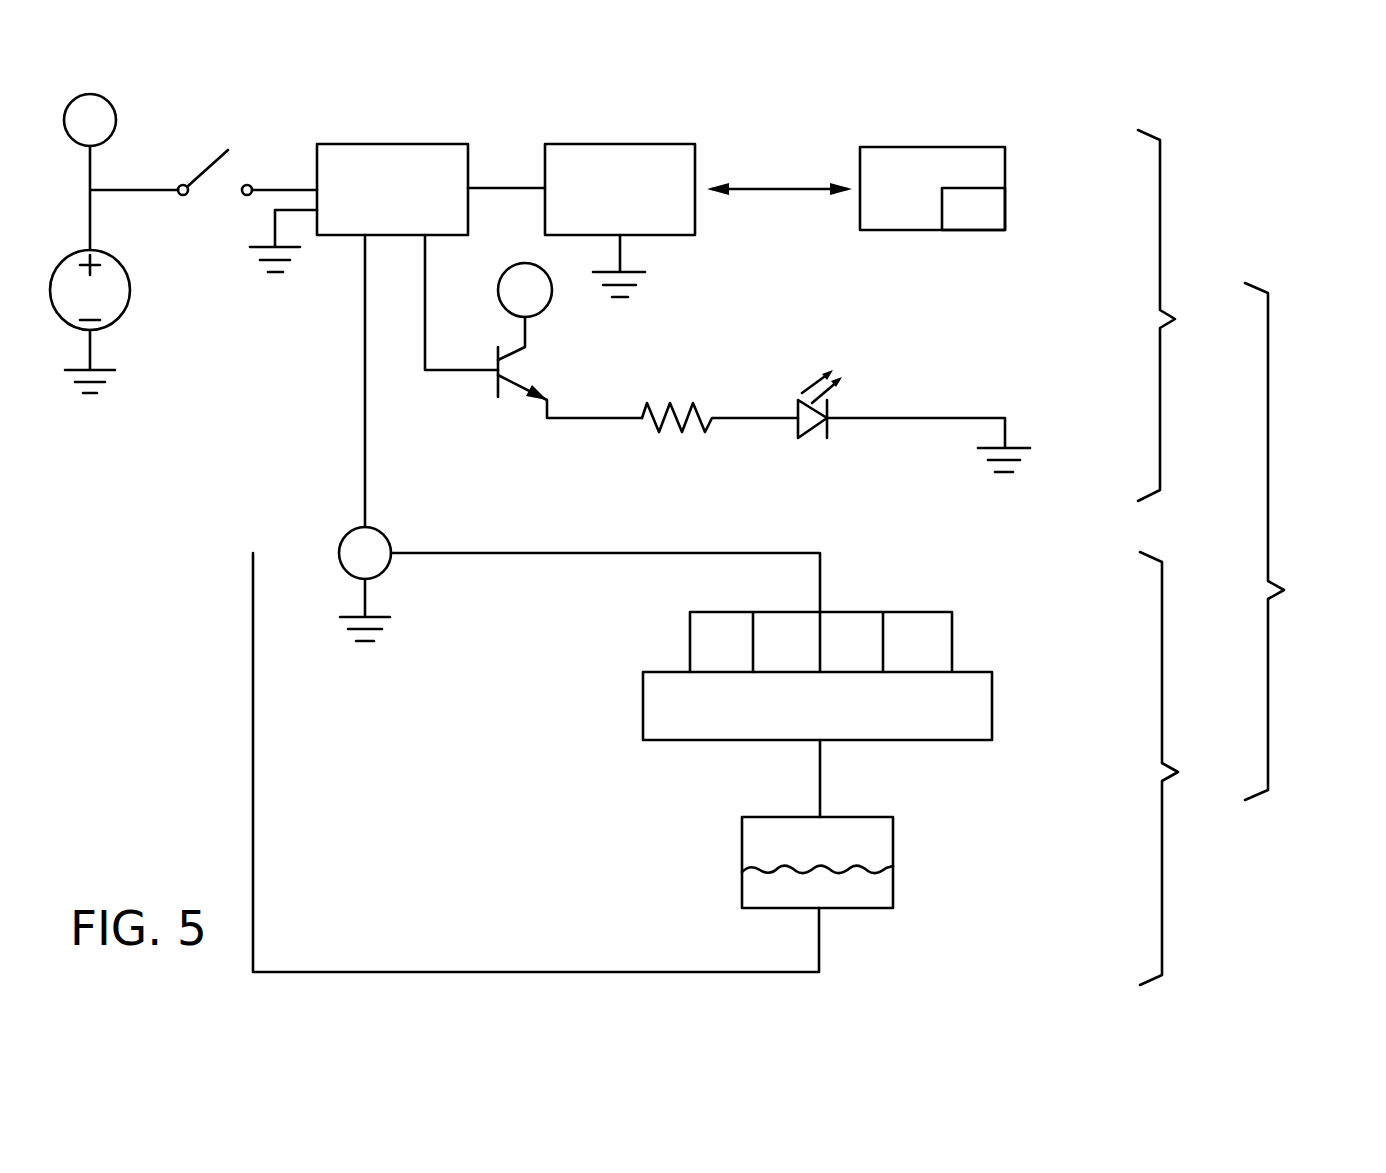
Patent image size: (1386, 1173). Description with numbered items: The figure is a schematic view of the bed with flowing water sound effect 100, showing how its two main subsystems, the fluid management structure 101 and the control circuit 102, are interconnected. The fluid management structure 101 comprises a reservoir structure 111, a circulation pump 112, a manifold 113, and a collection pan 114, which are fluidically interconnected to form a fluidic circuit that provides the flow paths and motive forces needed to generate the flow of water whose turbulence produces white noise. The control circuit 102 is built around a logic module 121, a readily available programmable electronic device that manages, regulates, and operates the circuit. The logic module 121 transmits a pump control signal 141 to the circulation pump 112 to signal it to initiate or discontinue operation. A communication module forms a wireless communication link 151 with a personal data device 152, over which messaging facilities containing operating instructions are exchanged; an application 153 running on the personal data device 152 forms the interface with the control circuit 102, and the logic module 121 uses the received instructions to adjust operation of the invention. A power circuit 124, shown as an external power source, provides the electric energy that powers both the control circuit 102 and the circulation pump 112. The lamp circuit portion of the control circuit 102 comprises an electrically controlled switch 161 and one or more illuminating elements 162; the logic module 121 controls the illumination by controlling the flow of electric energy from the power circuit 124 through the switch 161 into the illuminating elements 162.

The bed with flowing water sound effect 100 is at (1299, 541).
The fluid management structure 101 is at (1197, 768).
The control circuit 102 is at (1196, 315).
The reservoir structure 111 is at (893, 857).
The circulation pump 112 is at (337, 532).
The manifold 113 is at (847, 482).
The collection pan 114 is at (983, 703).
The logic module 121 is at (415, 144).
The power circuit 124 is at (130, 287).
The pump control signal 141 is at (365, 422).
The wireless communication link 151 is at (778, 188).
The personal data device 152 is at (977, 157).
The application 153 is at (980, 230).
The electrically controlled switch 161 is at (515, 405).
The illuminating elements 162 is at (848, 428).